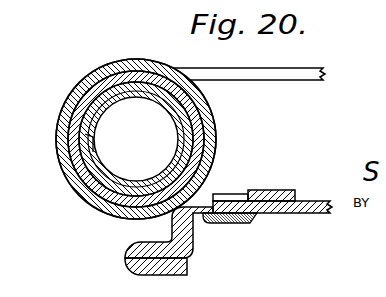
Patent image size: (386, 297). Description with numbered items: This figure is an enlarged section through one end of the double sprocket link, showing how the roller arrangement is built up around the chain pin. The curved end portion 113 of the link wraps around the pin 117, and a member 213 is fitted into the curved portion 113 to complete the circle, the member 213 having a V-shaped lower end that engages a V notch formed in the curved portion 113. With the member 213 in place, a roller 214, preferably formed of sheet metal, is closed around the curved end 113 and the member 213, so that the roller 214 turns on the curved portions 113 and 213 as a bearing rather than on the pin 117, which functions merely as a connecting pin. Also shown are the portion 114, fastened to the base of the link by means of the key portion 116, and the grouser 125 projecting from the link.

The curved end portion 113 is at (58, 126).
The roller 214 is at (93, 63).
The pin 117 is at (100, 90).
The member 213 is at (193, 118).
The portion 114 is at (294, 187).
The key portion 116 is at (228, 197).
The grouser 125 is at (193, 245).